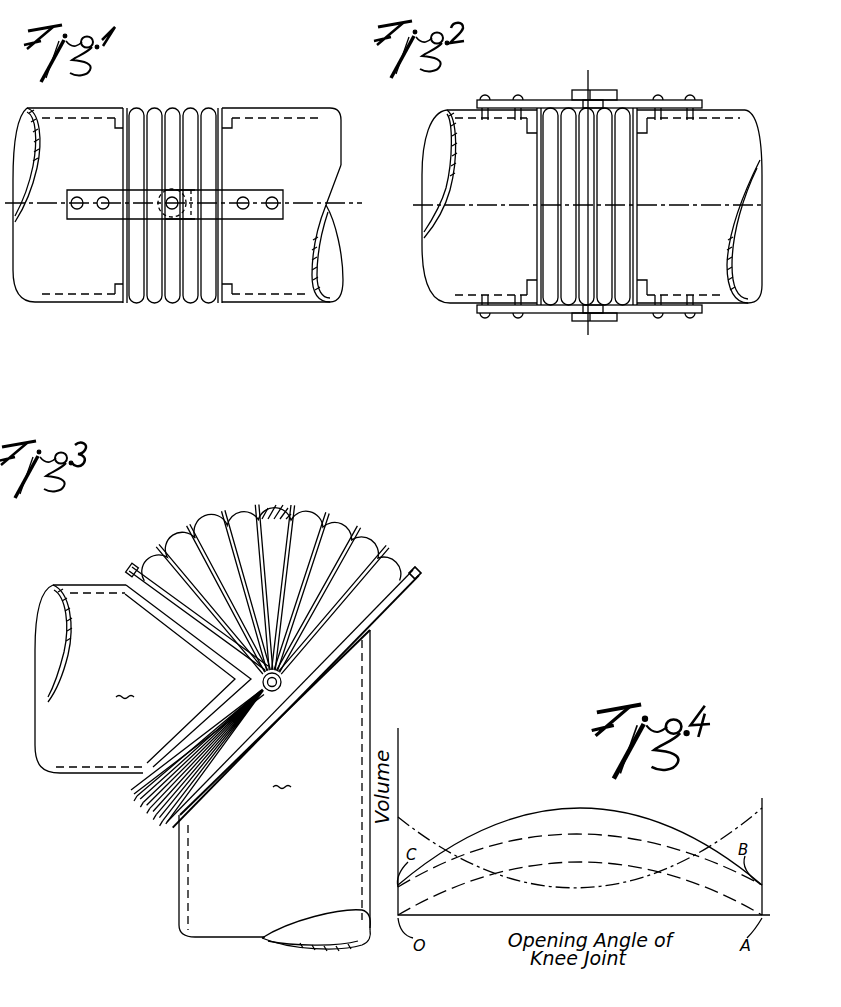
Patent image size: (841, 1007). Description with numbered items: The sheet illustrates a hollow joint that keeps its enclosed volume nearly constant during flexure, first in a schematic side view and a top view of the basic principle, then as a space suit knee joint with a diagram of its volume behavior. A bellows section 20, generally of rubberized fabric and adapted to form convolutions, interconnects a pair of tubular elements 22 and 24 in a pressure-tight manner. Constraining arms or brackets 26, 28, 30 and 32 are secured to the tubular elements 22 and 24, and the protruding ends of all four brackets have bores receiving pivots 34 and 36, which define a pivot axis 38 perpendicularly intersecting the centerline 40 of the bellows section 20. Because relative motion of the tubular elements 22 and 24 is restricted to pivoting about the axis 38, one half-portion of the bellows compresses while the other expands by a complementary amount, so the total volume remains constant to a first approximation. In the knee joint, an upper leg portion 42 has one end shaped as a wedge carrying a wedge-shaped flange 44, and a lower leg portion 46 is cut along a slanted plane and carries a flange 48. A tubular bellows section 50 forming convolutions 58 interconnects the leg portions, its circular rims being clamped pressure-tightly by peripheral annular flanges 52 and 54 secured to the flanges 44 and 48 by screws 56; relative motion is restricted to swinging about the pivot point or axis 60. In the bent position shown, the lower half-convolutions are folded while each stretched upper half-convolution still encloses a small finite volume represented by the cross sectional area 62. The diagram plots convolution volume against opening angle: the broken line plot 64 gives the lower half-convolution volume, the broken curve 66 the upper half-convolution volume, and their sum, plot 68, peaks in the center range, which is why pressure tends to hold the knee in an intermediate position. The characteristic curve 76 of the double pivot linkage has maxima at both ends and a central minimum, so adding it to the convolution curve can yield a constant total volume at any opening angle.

In FIG. 1, the bellows section 20 is at (199, 103).
In FIG. 1, the tubular element 22 is at (86, 108).
In FIG. 2, the tubular element 22 is at (447, 115).
In FIG. 1, the tubular element 24 is at (313, 108).
In FIG. 2, the tubular element 24 is at (717, 109).
In FIG. 1, the arm or bracket 26 is at (105, 220).
In FIG. 2, the arm or bracket 26 is at (558, 314).
In FIG. 1, the arm or bracket 28 is at (263, 197).
In FIG. 2, the arm or bracket 28 is at (634, 314).
In FIG. 2, the arm or bracket 30 is at (534, 100).
In FIG. 2, the arm or bracket 32 is at (638, 100).
In FIG. 1, the pivot 34 is at (168, 213).
In FIG. 2, the pivot 34 is at (578, 327).
In FIG. 2, the pivot 36 is at (594, 97).
In FIG. 2, the pivot axis 38 is at (584, 75).
In FIG. 1, the centerline 40 is at (343, 203).
In FIG. 2, the centerline 40 is at (719, 205).
In FIG. 3, the upper leg portion 42 is at (143, 679).
In FIG. 3, the wedge-shaped flange 44 is at (130, 791).
In FIG. 3, the lower leg portion 46 is at (274, 790).
In FIG. 3, the flange 48 is at (337, 654).
In FIG. 3, the tubular bellows section 50 is at (233, 585).
In FIG. 3, the peripheral annular flange 52 is at (135, 562).
In FIG. 3, the peripheral annular flange 54 is at (418, 568).
In FIG. 3, the screws 56 is at (128, 566).
In FIG. 3, the convolutions 58 is at (222, 510).
In FIG. 3, the pivot point or axis 60 is at (281, 687).
In FIG. 3, the cross sectional area 62 is at (282, 504).
In FIG. 4, the broken line plot 64 is at (470, 884).
In FIG. 4, the broken curve 66 is at (486, 848).
In FIG. 4, the plot 68 is at (663, 802).
In FIG. 4, the characteristic curve 76 is at (432, 834).